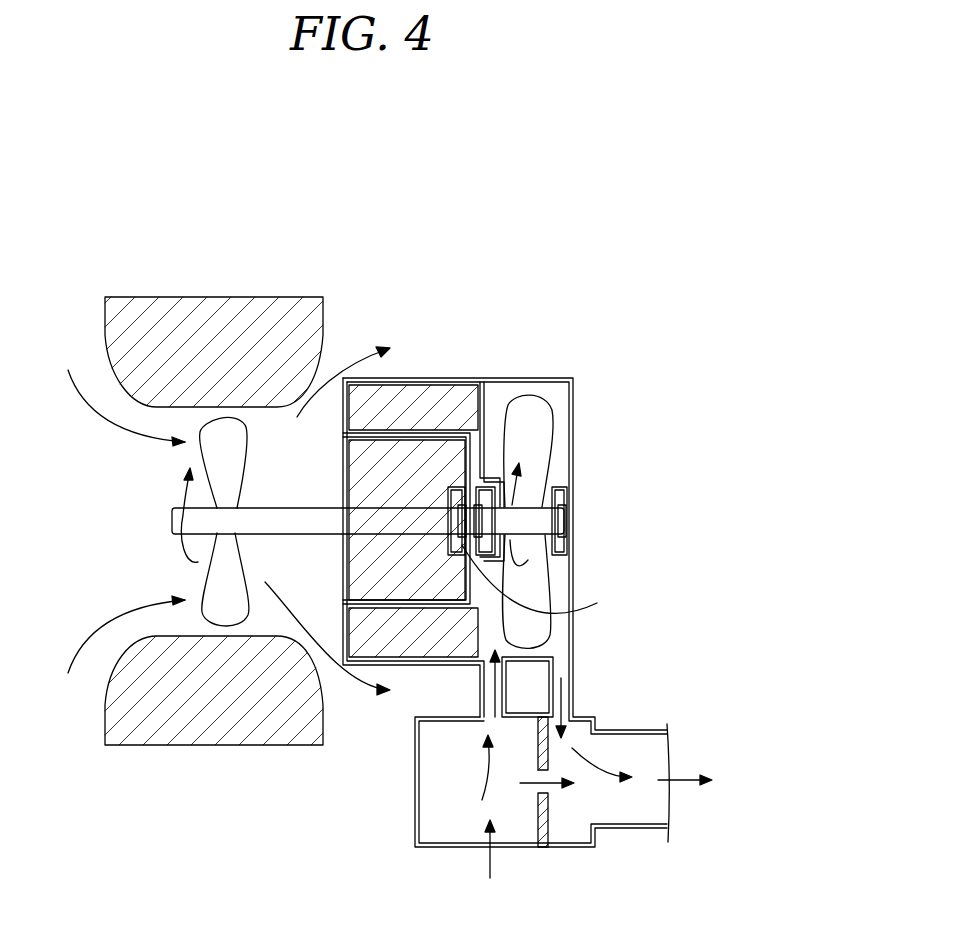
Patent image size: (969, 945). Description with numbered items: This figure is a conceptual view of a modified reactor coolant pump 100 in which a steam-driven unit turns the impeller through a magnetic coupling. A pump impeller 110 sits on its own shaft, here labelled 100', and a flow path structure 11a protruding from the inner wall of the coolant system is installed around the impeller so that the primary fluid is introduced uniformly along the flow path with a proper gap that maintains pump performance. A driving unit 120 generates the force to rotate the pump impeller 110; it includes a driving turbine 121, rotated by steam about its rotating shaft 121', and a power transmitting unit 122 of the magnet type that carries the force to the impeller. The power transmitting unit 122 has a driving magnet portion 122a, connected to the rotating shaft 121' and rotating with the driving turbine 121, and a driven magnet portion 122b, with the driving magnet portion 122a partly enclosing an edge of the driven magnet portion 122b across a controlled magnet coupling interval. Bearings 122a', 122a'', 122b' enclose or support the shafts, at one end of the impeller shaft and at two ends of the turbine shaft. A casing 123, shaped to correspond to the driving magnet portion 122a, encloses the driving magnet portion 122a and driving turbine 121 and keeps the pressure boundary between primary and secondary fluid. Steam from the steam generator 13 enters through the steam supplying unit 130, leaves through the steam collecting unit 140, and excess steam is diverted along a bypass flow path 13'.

The reactor coolant pump 100 is at (201, 427).
The flow path structure 11a is at (157, 315).
The pump impeller 110 is at (222, 603).
The fan shaft 100' is at (368, 661).
The driving unit 120 is at (540, 250).
The casing 123 is at (520, 378).
The power transmitting unit 122 is at (465, 238).
The driving magnet portion 122a is at (413, 446).
The driven magnet portion 122b is at (398, 417).
The driving turbine 121 is at (588, 521).
The rotating shaft of the driving turbine 121' is at (570, 521).
The bearing 122a'' is at (628, 511).
The bearing 122a' is at (557, 536).
The bearing 122b' is at (572, 553).
The steam supplying unit 130 is at (492, 698).
The steam collecting unit 140 is at (561, 698).
The steam generator 13 is at (563, 821).
The bypass flow path 13' is at (562, 821).